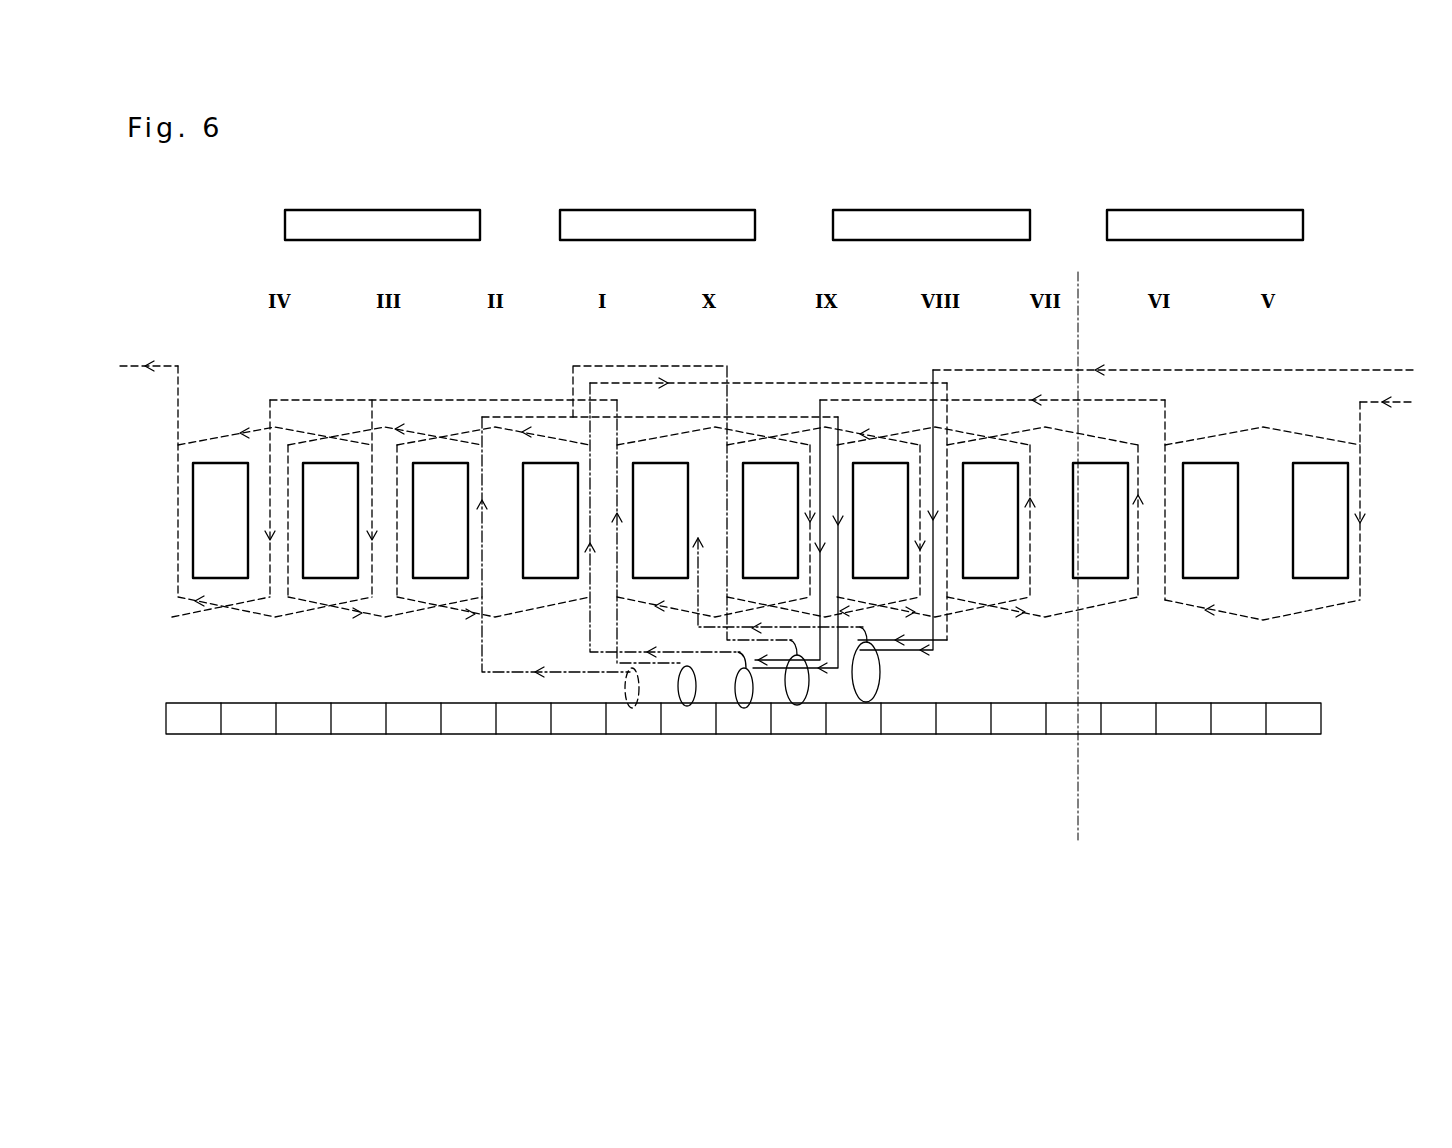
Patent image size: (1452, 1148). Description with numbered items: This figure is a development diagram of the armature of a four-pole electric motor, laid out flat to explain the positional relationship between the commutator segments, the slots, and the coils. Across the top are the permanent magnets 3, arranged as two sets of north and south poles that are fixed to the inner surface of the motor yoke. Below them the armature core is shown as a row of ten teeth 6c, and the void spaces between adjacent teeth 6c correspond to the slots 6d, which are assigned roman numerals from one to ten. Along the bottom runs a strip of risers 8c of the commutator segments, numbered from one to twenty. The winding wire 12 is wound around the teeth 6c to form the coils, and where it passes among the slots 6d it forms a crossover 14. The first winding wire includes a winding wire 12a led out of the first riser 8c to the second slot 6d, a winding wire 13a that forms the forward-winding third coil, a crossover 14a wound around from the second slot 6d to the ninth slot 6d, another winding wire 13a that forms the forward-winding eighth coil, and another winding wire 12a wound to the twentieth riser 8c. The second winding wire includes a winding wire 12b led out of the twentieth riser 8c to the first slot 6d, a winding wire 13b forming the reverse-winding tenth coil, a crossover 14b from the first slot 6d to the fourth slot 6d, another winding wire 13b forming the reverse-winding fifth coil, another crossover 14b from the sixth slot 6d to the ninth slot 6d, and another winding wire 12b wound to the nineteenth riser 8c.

The permanent magnets 3 is at (610, 210).
The teeth 6c is at (337, 560).
The slots 6d is at (503, 598).
The risers 8c is at (533, 723).
The winding wire 12 is at (760, 668).
The winding wire 12a is at (496, 674).
The winding wire 12b is at (667, 663).
The winding wire 13a is at (355, 425).
The winding wire 13b is at (673, 425).
The crossover 14 is at (690, 400).
The crossover 14a is at (573, 366).
The crossover 14b is at (425, 400).